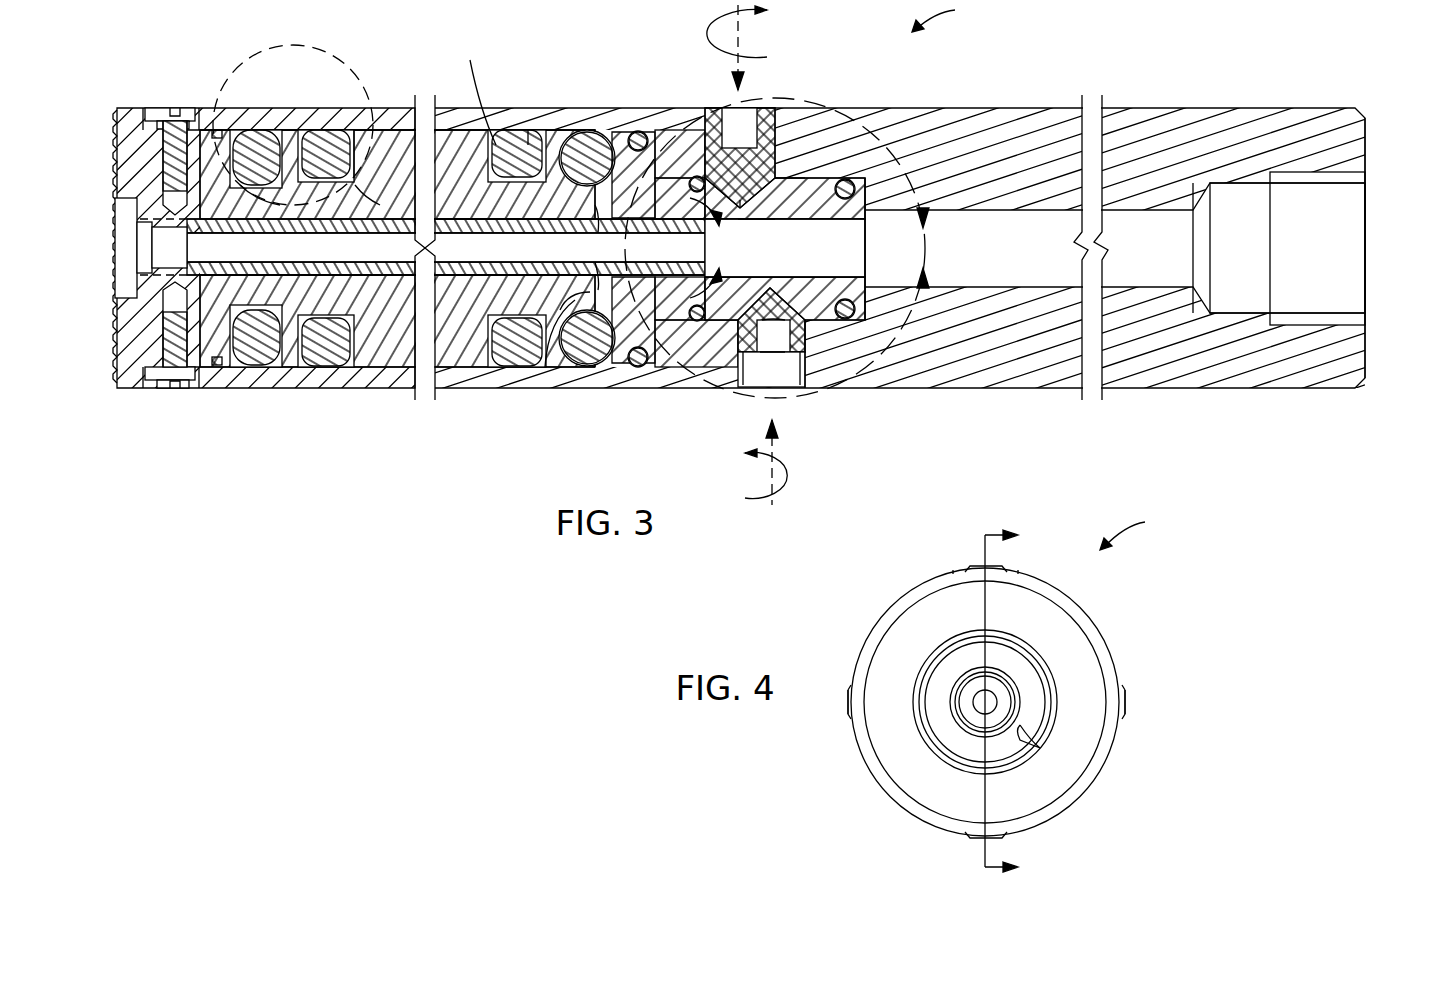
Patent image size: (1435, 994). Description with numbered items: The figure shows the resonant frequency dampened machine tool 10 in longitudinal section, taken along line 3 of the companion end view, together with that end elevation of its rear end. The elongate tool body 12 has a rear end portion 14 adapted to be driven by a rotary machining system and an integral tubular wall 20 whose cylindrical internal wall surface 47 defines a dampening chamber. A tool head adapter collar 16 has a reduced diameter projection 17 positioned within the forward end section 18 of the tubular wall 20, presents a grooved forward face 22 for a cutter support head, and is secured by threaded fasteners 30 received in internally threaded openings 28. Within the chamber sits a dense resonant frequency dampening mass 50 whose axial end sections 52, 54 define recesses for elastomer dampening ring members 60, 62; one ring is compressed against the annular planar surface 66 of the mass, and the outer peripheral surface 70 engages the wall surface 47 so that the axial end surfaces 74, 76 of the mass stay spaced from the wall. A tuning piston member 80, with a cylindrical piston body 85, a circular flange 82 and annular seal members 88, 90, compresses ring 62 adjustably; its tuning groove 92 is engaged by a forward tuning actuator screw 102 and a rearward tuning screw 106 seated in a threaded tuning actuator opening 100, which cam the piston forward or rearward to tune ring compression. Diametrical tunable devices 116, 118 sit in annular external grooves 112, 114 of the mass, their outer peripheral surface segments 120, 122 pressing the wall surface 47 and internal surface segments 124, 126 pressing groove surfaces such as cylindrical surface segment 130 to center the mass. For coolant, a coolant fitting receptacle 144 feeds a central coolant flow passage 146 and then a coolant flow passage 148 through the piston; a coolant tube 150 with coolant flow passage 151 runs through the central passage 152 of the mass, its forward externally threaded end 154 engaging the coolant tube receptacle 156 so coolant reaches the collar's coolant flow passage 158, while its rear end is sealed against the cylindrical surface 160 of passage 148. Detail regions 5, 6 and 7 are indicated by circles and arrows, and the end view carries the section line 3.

In FIG. 3, the resonant frequency dampened machine tool 10 is at (948, 16).
In FIG. 4, the resonant frequency dampened machine tool 10 is at (1138, 530).
In FIG. 3, the elongate tool body 12 is at (1022, 122).
In FIG. 4, the elongate tool body 12 is at (1082, 610).
In FIG. 3, the rear end portion 14 is at (1232, 108).
In FIG. 3, the tool head adapter collar 16 is at (142, 368).
In FIG. 3, the reduced diameter projection 17 is at (182, 385).
In FIG. 3, the forward end section 18 is at (218, 366).
In FIG. 3, the tubular wall 20 is at (285, 130).
In FIG. 3, the grooved forward face 22 is at (113, 128).
In FIG. 3, the internally threaded openings 28 is at (130, 152).
In FIG. 3, the threaded fasteners 30 is at (178, 108).
In FIG. 3, the cylindrical internal wall surface 47 is at (390, 130).
In FIG. 3, the resonant frequency dampening mass 50 is at (464, 342).
In FIG. 3, the axial end section 52 is at (278, 352).
In FIG. 3, the axial end section 54 is at (665, 350).
In FIG. 3, the elastomer dampening ring member 60 is at (257, 140).
In FIG. 3, the elastomer dampening ring member 62 is at (588, 352).
In FIG. 3, the annular generally planar surface 66 is at (548, 330).
In FIG. 3, the outer peripheral surface 70 is at (606, 140).
In FIG. 3, the axial end surface 74 is at (136, 320).
In FIG. 3, the axial end surface 76 is at (603, 212).
In FIG. 3, the tuning piston member 80 is at (823, 205).
In FIG. 3, the circular flange 82 is at (633, 192).
In FIG. 3, the cylindrical piston body 85 is at (818, 188).
In FIG. 3, the annular seal member 88 is at (702, 342).
In FIG. 3, the annular seal member 90 is at (853, 186).
In FIG. 3, the tuning groove 92 is at (778, 150).
In FIG. 3, the internally threaded tuning actuator opening 100 is at (754, 378).
In FIG. 4, the internally threaded tuning actuator opening 100 is at (995, 838).
In FIG. 3, the tuning actuator screw 102 is at (765, 120).
In FIG. 4, the tuning actuator screw 102 is at (1128, 702).
In FIG. 3, the rearward tuning screw 106 is at (794, 378).
In FIG. 3, the annular external groove 112 is at (326, 140).
In FIG. 3, the annular external groove 114 is at (512, 142).
In FIG. 3, the diametrical tunable device 116 is at (350, 140).
In FIG. 3, the diametrical tunable device 118 is at (473, 90).
In FIG. 3, the outer peripheral surface segment 120 is at (322, 360).
In FIG. 3, the outer peripheral surface segment 122 is at (516, 360).
In FIG. 3, the internal surface segment 124 is at (422, 247).
In FIG. 3, the internal surface segment 126 is at (518, 312).
In FIG. 3, the cylindrical surface segment 130 is at (530, 130).
In FIG. 3, the coolant fitting receptacle 144 is at (1348, 242).
In FIG. 4, the coolant fitting receptacle 144 is at (1022, 742).
In FIG. 3, the coolant flow passage 146 is at (1140, 222).
In FIG. 4, the coolant flow passage 146 is at (1010, 690).
In FIG. 3, the coolant flow passage 148 is at (870, 255).
In FIG. 3, the coolant tube 150 is at (466, 235).
In FIG. 4, the coolant tube 150 is at (975, 690).
In FIG. 3, the coolant flow passage 151 is at (295, 240).
In FIG. 4, the coolant flow passage 151 is at (980, 705).
In FIG. 3, the central passage 152 is at (368, 240).
In FIG. 3, the forward externally threaded end 154 is at (125, 214).
In FIG. 3, the coolant tube receptacle 156 is at (148, 268).
In FIG. 3, the coolant flow passage 158 is at (165, 242).
In FIG. 3, the cylindrical surface 160 is at (748, 268).
In FIG. 3, the detail circle 5 is at (255, 60).
In FIG. 3, the section line 6 is at (709, 248).
In FIG. 3, the section line 7 is at (777, 248).
In FIG. 4, the section line 3 is at (1011, 702).